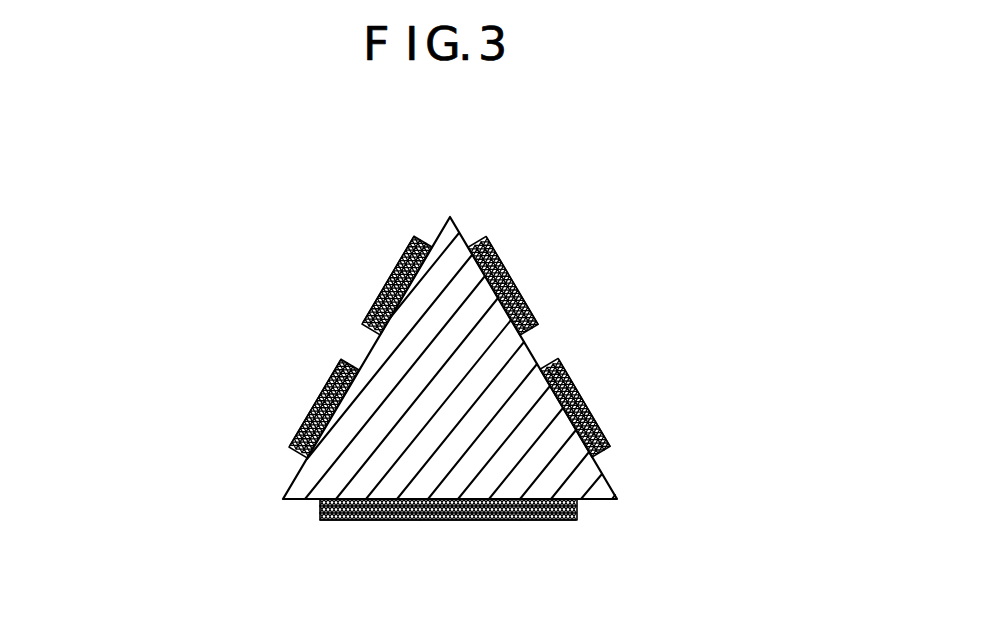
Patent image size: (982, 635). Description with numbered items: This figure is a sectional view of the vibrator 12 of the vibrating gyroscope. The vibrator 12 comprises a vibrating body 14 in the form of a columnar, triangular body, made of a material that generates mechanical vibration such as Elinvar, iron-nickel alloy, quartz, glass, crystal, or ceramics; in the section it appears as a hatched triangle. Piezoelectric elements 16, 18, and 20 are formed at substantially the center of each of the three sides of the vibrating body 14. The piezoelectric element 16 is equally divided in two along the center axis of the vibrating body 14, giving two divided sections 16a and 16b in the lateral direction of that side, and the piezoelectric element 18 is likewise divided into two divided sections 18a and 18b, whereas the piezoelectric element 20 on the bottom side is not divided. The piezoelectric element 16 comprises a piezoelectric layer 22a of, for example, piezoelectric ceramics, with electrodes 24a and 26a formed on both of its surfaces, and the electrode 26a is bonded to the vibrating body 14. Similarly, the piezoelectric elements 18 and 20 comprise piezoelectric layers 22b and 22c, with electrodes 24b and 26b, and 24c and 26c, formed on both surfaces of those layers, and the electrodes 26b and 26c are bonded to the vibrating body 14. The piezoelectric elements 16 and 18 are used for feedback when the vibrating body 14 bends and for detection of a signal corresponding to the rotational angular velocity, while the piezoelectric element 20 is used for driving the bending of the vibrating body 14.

The vibrator 12 is at (176, 153).
The vibrating body 14 is at (593, 500).
The piezoelectric element 16 is at (227, 295).
The divided section 16a is at (342, 322).
The divided section 16b is at (314, 371).
The piezoelectric element 18 is at (697, 303).
The divided section 18a is at (554, 318).
The divided section 18b is at (583, 372).
The piezoelectric element 20 is at (558, 538).
The piezoelectric layer 22a is at (398, 270).
The piezoelectric layer 22b is at (498, 265).
The piezoelectric layer 22c is at (415, 520).
The electrode 24a is at (380, 300).
The electrode 24b is at (515, 280).
The electrode 24c is at (490, 520).
The electrode 26a is at (410, 242).
The electrode 26b is at (487, 240).
The electrode 26c is at (343, 520).